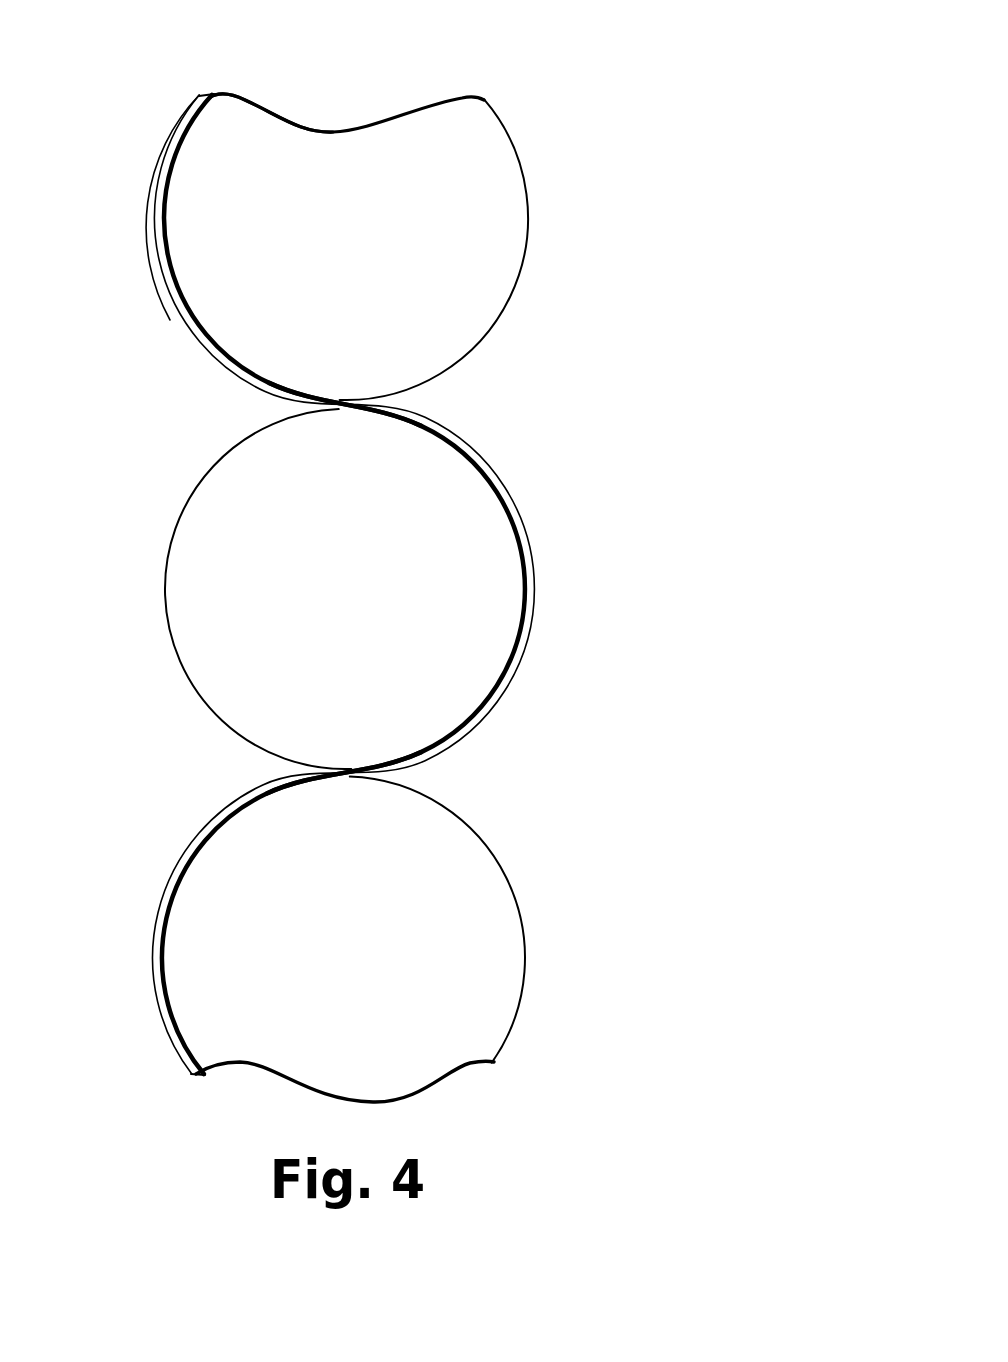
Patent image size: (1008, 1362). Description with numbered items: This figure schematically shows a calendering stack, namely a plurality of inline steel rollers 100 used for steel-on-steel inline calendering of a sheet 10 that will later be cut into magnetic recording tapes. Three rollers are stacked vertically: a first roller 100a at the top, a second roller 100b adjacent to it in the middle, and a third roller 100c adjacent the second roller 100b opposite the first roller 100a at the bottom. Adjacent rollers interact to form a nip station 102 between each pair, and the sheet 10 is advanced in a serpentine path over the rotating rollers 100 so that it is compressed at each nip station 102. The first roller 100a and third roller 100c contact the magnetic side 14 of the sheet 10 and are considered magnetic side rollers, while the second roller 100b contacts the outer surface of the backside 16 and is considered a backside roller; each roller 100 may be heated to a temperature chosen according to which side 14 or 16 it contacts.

The rollers 100 is at (565, 60).
The first roller 100a is at (503, 186).
The second roller 100b is at (487, 570).
The third roller 100c is at (487, 913).
The nip station 102 is at (440, 398).
The sheet 10 is at (155, 233).
The magnetic side 14 is at (185, 139).
The backside 16 is at (168, 290).